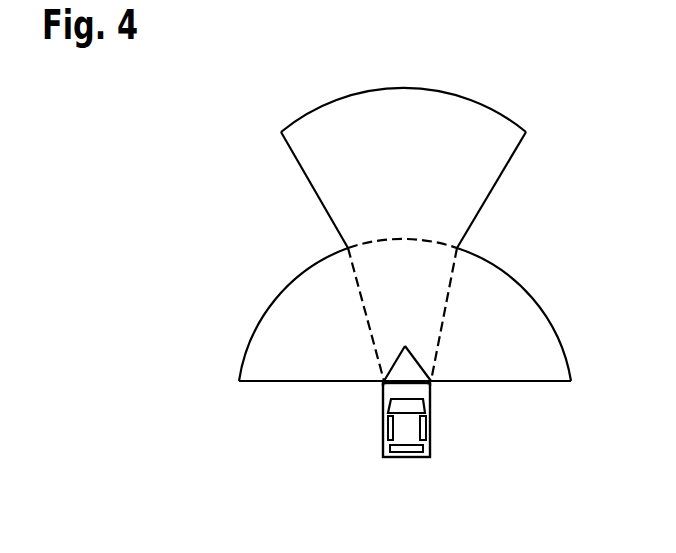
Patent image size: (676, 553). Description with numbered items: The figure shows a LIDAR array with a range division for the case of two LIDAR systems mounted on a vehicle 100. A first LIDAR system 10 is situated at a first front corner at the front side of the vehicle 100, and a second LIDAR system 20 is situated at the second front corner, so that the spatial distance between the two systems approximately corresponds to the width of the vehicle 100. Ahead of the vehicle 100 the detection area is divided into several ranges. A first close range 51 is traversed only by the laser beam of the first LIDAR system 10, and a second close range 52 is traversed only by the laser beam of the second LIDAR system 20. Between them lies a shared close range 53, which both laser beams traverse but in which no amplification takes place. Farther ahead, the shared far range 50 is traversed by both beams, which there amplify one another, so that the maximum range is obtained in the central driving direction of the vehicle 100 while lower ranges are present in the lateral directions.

The vehicle 100 is at (410, 458).
The first LIDAR system 10 is at (431, 385).
The second LIDAR system 20 is at (382, 385).
The shared far range 50 is at (420, 165).
The first close range 51 is at (510, 329).
The second close range 52 is at (324, 329).
The shared close range 53 is at (423, 329).